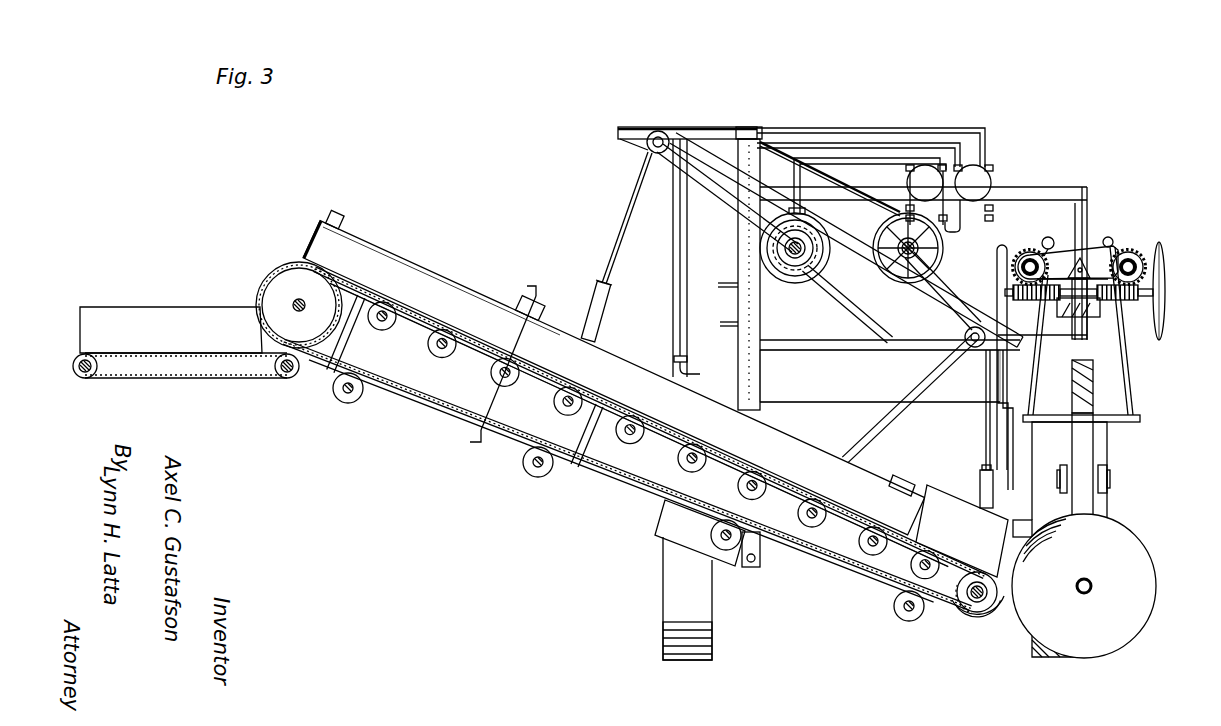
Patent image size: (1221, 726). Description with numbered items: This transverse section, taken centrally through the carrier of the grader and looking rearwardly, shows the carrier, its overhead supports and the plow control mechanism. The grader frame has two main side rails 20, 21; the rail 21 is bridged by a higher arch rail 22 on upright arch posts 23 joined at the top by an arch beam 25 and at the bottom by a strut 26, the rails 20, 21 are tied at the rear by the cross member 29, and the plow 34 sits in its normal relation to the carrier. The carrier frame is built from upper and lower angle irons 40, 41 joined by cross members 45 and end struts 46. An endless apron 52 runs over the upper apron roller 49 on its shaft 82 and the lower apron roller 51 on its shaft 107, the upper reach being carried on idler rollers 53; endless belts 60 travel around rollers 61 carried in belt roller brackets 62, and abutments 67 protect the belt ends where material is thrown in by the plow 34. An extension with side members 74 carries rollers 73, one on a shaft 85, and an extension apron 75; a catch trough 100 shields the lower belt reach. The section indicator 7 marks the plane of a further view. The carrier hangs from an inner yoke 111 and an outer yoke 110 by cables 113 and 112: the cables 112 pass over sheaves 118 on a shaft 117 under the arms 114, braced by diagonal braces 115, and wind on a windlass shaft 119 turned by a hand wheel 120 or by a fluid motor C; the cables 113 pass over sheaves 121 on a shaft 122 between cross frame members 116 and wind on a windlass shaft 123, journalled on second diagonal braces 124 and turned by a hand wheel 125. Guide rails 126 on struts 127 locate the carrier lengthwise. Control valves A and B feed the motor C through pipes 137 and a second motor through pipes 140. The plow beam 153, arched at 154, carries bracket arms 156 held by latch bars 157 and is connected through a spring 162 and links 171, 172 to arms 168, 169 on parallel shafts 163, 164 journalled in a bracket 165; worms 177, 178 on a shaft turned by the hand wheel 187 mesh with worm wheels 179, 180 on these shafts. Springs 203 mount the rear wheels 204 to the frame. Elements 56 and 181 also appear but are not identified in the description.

The section line 7 is at (502, 365).
The main side rail 20 is at (1000, 370).
The main side rail 21 is at (722, 324).
The arch rail 22 is at (718, 285).
The upright arch posts 23 is at (800, 150).
The arch beam 25 is at (748, 127).
The strut 26 is at (751, 567).
The rear cross member 29 is at (880, 376).
The plow 34 is at (1084, 586).
The upper angle irons 40 is at (471, 347).
The lower angle irons 41 is at (440, 405).
The angle iron cross members 45 is at (590, 450).
The end struts 46 is at (598, 440).
The upper apron roller 49 is at (258, 298).
The lower apron roller 51 is at (980, 612).
The endless apron 52 is at (400, 385).
The idler rollers 53 is at (653, 440).
The return rollers 56 is at (531, 476).
The endless belts 60 is at (383, 248).
The belt rollers 61 is at (340, 232).
The belt roller brackets 62 is at (345, 212).
The protecting abutments 67 is at (948, 526).
The extension rollers 73 is at (82, 378).
The side members 74 is at (171, 330).
The extension apron 75 is at (186, 389).
The shaft of upper apron roller 82 is at (293, 302).
The shaft of inner extension roller 85 is at (350, 403).
The catch trough 100 is at (905, 621).
The shaft of lower apron roller 107 is at (960, 612).
The outer yoke 110 is at (597, 312).
The inner yoke 111 is at (980, 480).
The suspending cables 112 is at (622, 213).
The suspending cables 113 is at (997, 420).
The laterally projecting arms 114 is at (700, 138).
The lower diagonal braces 115 is at (665, 172).
The cross frame members 116 is at (900, 348).
The shaft 117 is at (655, 131).
The sheaves 118 is at (645, 151).
The windlass shaft 119 is at (813, 248).
The hand wheel 120 is at (798, 283).
The sheaves 121 is at (963, 348).
The shaft 122 is at (970, 346).
The windlass shaft 123 is at (905, 283).
The second diagonal braces 124 is at (848, 158).
The hand wheel 125 is at (898, 258).
The guide rails 126 is at (665, 512).
The struts 127 is at (693, 545).
The pipes 137 is at (920, 143).
The pipes 140 is at (672, 268).
The plow beam 153 is at (1086, 505).
The arch 154 is at (1093, 380).
The bracket arms 156 is at (1110, 490).
The latch bars 157 is at (1107, 468).
The spring 162 is at (1110, 422).
The shaft 163 is at (1130, 249).
The shaft 164 is at (1028, 238).
The bracket 165 is at (1092, 248).
The arm 168 is at (1100, 250).
The arm 169 is at (1058, 215).
The link 171 is at (1130, 400).
The link 172 is at (1037, 318).
The worm 177 is at (1153, 288).
The worm 178 is at (1010, 283).
The worm wheel 179 is at (1152, 260).
The worm wheel 180 is at (1010, 270).
The handwheel 181 is at (1165, 294).
The hand wheel 187 is at (960, 320).
The springs 203 is at (986, 440).
The rear wheels 204 is at (712, 635).
The control valve A is at (993, 178).
The control valve B is at (906, 184).
The fluid motor C is at (788, 268).